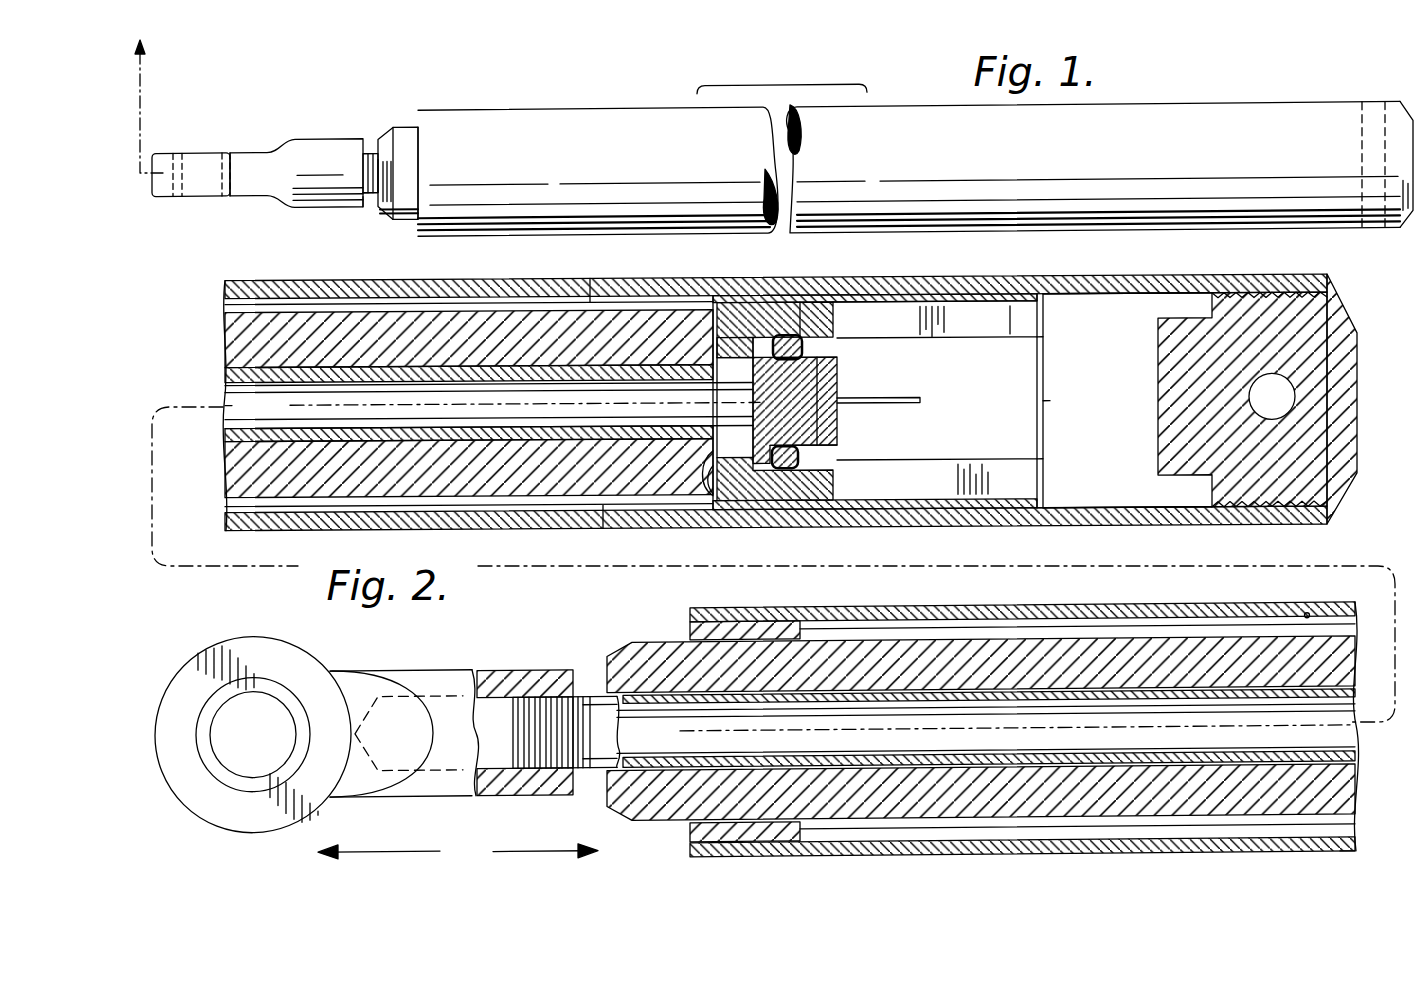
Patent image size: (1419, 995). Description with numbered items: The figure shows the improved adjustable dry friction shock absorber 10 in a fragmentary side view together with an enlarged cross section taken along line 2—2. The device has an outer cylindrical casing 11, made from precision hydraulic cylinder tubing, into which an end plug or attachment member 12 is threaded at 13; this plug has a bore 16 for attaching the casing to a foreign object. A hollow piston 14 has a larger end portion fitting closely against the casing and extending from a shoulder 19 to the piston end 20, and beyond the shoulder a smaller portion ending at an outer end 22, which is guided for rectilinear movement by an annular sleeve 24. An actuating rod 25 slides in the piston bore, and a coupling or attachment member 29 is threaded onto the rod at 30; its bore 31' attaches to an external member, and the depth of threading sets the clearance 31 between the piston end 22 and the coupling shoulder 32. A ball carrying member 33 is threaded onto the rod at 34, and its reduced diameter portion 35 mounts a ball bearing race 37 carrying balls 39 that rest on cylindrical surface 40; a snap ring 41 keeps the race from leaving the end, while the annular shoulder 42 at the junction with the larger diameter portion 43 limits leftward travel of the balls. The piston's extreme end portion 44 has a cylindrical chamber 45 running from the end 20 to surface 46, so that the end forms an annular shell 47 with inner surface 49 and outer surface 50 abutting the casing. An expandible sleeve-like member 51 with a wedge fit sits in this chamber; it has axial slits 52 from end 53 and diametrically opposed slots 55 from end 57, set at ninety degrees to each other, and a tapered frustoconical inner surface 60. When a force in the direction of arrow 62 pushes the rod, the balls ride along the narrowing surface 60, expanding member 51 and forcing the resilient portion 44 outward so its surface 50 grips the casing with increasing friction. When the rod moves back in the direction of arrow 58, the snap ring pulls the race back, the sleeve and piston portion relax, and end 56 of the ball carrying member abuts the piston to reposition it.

In FIG. 1, the section line 2— 2 is at (771, 106).
In FIG. 2, the section line 2— 2 is at (773, 564).
In FIG. 1, the adjustable dry friction shock absorber 10 is at (634, 97).
In FIG. 2, the adjustable dry friction shock absorber 10 is at (214, 374).
In FIG. 1, the outer cylindrical casing 11 is at (820, 131).
In FIG. 2, the end plug or attachment member 12 is at (1357, 345).
In FIG. 2, the threaded connection 13 is at (1276, 285).
In FIG. 1, the hollow piston 14 is at (405, 132).
In FIG. 2, the hollow piston 14 is at (628, 530).
In FIG. 2, the bore 16 is at (1296, 404).
In FIG. 2, the shoulder 19 is at (586, 294).
In FIG. 2, the end of piston 20 is at (1045, 398).
In FIG. 1, the outer end 22 is at (378, 166).
In FIG. 2, the outer end 22 is at (605, 690).
In FIG. 2, the annular sleeve 24 is at (760, 628).
In FIG. 1, the actuating rod 25 is at (364, 217).
In FIG. 1, the coupling or attachment member 29 is at (282, 146).
In FIG. 2, the coupling or attachment member 29 is at (435, 678).
In FIG. 2, the threaded connection 30 is at (518, 803).
In FIG. 1, the clearance 31 is at (351, 137).
In FIG. 2, the clearance 31 is at (567, 690).
In FIG. 1, the bore 31' is at (191, 154).
In FIG. 2, the bore 31' is at (253, 734).
In FIG. 1, the shoulder 32 is at (365, 202).
In FIG. 2, the shoulder 32 is at (574, 803).
In FIG. 2, the ball carrying member 33 is at (741, 350).
In FIG. 2, the threaded connection 34 is at (732, 442).
In FIG. 2, the reduced diameter portion 35 is at (812, 374).
In FIG. 2, the ball bearing race 37 is at (810, 458).
In FIG. 2, the balls 39 is at (808, 458).
In FIG. 2, the cylindrical surface 40 is at (820, 352).
In FIG. 2, the snap ring 41 is at (835, 392).
In FIG. 2, the annular shoulder 42 is at (790, 464).
In FIG. 2, the larger diameter portion 43 is at (770, 302).
In FIG. 2, the extreme end portion 44 is at (952, 300).
In FIG. 2, the cylindrical bore or chamber 45 is at (1010, 312).
In FIG. 2, the surface 46 is at (718, 348).
In FIG. 2, the annular cylindrical shell 47 is at (905, 300).
In FIG. 2, the inner surface of shell 49 is at (915, 322).
In FIG. 2, the outer surface of shell 50 is at (860, 300).
In FIG. 2, the expandible sleeve-like member 51 is at (1012, 432).
In FIG. 2, the axial slits 52 is at (1040, 337).
In FIG. 2, the end of expandible member 53 is at (1043, 464).
In FIG. 2, the slots 55 is at (910, 409).
In FIG. 2, the end of ball carrying member 56 is at (695, 472).
In FIG. 2, the end of expandible member 57 is at (710, 497).
In FIG. 2, the arrow 58 is at (390, 856).
In FIG. 2, the frustoconical surface 60 is at (1015, 320).
In FIG. 2, the arrow 62 is at (520, 858).